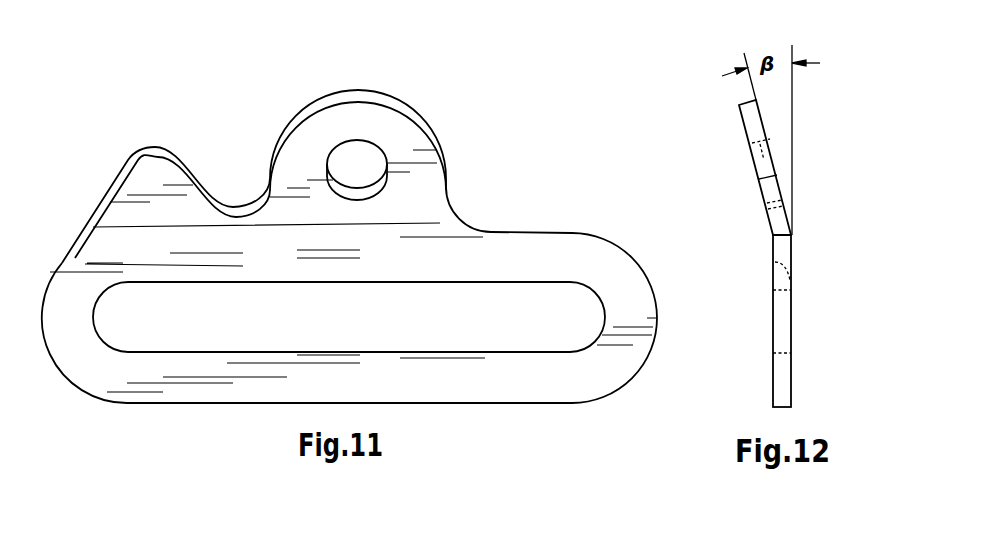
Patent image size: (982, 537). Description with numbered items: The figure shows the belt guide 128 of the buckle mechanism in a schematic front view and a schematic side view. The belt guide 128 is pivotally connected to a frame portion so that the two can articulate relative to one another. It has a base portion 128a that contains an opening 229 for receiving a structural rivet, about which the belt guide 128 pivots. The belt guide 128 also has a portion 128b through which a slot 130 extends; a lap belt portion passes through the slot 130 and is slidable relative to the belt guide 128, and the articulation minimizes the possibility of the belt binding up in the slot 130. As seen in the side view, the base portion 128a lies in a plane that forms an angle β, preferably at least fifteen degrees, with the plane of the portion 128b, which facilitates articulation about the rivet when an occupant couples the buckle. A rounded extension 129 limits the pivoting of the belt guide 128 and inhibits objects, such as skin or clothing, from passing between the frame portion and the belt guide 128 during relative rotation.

In FIG. 11, the belt guide 128 is at (347, 262).
In FIG. 12, the belt guide 128 is at (744, 253).
In FIG. 11, the base portion 128a is at (300, 143).
In FIG. 12, the base portion 128a is at (702, 167).
In FIG. 11, the portion 128b is at (347, 351).
In FIG. 12, the portion 128b is at (789, 321).
In FIG. 11, the rounded extension 129 is at (148, 180).
In FIG. 11, the slot 130 is at (223, 325).
In FIG. 12, the slot 130 is at (777, 348).
In FIG. 11, the opening 229 is at (357, 162).
In FIG. 12, the opening 229 is at (755, 168).